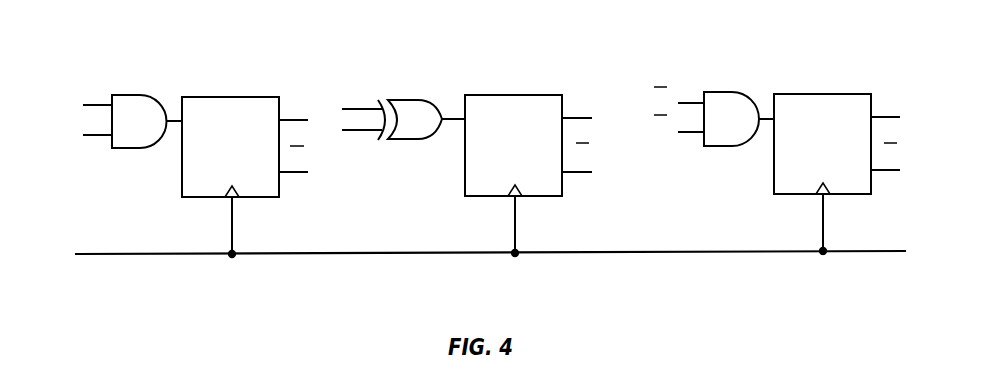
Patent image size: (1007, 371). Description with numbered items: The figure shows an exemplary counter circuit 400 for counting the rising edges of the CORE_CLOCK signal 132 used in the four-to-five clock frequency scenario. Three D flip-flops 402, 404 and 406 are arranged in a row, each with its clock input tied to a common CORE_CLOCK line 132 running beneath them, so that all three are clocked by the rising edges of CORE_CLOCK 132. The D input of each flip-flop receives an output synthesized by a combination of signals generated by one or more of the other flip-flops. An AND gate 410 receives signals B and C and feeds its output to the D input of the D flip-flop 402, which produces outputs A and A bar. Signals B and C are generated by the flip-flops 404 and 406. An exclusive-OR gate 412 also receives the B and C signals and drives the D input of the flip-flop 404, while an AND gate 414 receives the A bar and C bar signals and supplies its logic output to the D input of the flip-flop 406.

The counter circuit 400 is at (612, 51).
The D flip-flop 402 is at (245, 165).
The D flip-flop 404 is at (528, 163).
The D flip-flop 406 is at (837, 162).
The AND gate 410 is at (115, 138).
The exclusive-OR (XOR) gate 412 is at (392, 133).
The AND gate 414 is at (704, 132).
The CORE_CLOCK signal 132 is at (490, 269).